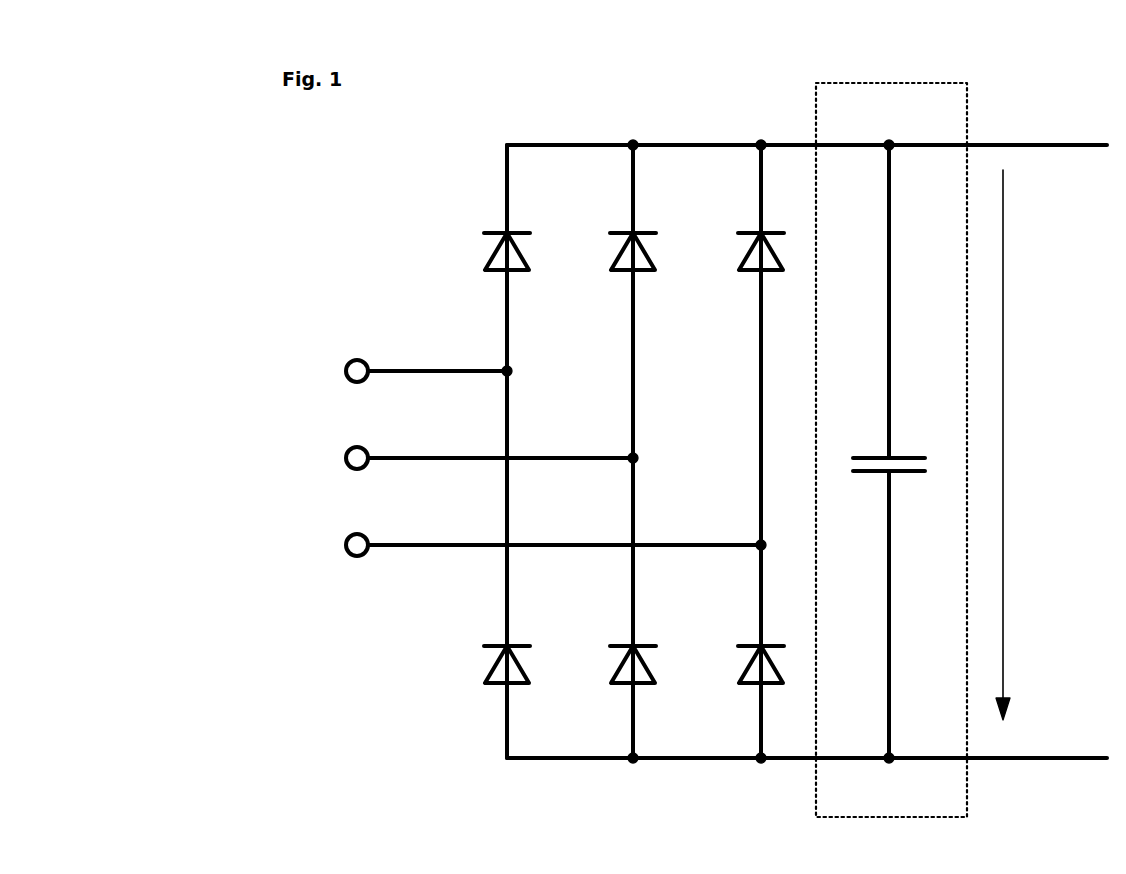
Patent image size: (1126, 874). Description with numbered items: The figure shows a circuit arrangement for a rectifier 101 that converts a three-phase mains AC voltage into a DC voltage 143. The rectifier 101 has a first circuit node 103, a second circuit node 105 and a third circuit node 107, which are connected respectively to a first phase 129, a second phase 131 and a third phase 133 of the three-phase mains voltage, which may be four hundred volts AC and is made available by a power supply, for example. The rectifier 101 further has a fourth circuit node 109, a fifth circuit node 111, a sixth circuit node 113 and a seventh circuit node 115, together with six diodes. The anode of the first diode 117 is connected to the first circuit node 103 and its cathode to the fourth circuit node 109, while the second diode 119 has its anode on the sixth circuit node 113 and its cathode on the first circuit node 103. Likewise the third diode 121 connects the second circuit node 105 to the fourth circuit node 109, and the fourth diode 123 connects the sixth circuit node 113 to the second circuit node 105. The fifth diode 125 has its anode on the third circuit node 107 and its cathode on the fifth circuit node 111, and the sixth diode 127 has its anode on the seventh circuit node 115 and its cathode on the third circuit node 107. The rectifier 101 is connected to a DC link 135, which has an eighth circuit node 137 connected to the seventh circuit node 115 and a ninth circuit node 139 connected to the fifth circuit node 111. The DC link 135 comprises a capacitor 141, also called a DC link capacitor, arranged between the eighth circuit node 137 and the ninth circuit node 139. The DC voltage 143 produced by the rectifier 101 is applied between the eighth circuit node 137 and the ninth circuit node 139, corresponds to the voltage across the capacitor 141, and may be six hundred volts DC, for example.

The rectifier 101 is at (497, 106).
The first circuit node 103 is at (503, 369).
The second circuit node 105 is at (629, 456).
The third circuit node 107 is at (757, 543).
The fourth circuit node 109 is at (636, 142).
The fifth circuit node 111 is at (762, 142).
The sixth circuit node 113 is at (635, 762).
The seventh circuit node 115 is at (762, 762).
The first diode 117 is at (486, 257).
The second diode 119 is at (486, 683).
The third diode 121 is at (613, 258).
The fourth diode 123 is at (614, 671).
The fifth diode 125 is at (742, 262).
The sixth diode 127 is at (742, 671).
The first phase 129 is at (346, 371).
The second phase 131 is at (346, 458).
The third phase 133 is at (346, 545).
The DC link 135 is at (969, 780).
The eighth circuit node 137 is at (892, 762).
The ninth circuit node 139 is at (889, 142).
The capacitor 141 is at (904, 455).
The DC voltage 143 is at (1005, 490).